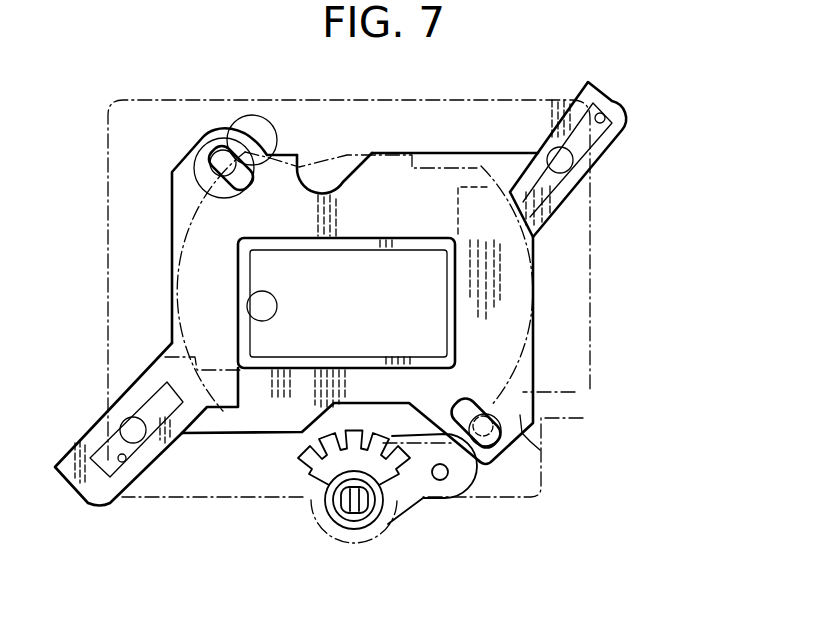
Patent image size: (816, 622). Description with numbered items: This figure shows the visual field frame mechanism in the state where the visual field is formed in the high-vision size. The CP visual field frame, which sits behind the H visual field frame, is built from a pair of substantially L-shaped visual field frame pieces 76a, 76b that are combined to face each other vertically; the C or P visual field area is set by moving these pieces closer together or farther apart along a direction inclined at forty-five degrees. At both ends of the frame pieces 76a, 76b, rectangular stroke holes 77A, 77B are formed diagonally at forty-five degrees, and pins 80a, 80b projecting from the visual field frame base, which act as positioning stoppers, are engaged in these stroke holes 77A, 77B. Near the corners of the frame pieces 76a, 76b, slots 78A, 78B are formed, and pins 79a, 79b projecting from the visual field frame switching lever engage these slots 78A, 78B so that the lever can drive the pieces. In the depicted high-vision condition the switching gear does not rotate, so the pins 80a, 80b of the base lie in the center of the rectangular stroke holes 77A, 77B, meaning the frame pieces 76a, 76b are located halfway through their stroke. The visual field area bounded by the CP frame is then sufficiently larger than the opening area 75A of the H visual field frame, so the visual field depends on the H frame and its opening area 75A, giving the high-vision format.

The opening area 75A is at (262, 318).
The visual field frame piece 76a is at (385, 180).
The visual field frame piece 76b is at (540, 450).
The stroke hole 77A is at (124, 462).
The stroke hole 77B is at (602, 122).
The slot 78A is at (255, 150).
The slot 78B is at (495, 460).
The pin 79a is at (213, 150).
The pin 79b is at (493, 423).
The pin 80a is at (133, 428).
The pin 80b is at (552, 172).